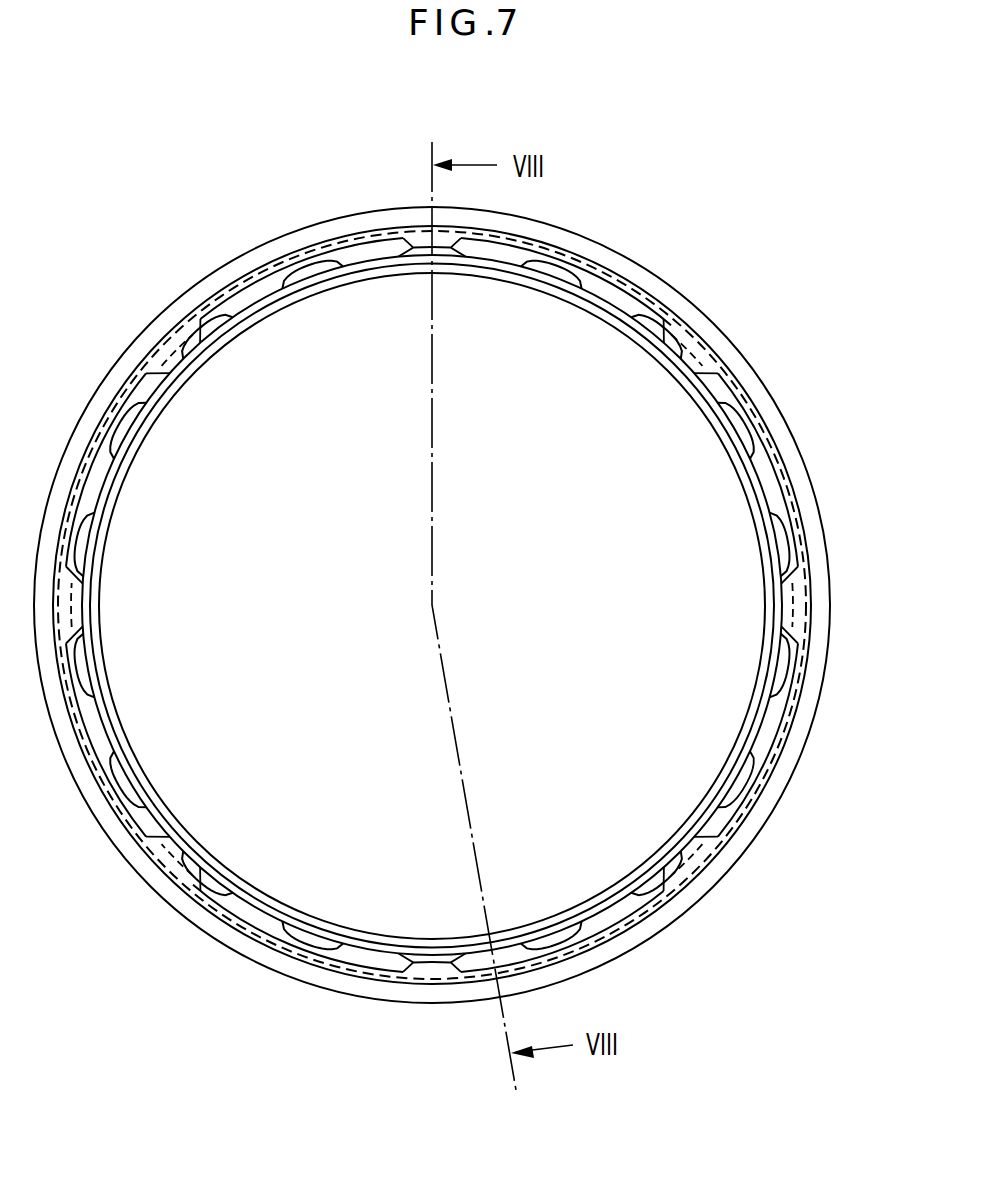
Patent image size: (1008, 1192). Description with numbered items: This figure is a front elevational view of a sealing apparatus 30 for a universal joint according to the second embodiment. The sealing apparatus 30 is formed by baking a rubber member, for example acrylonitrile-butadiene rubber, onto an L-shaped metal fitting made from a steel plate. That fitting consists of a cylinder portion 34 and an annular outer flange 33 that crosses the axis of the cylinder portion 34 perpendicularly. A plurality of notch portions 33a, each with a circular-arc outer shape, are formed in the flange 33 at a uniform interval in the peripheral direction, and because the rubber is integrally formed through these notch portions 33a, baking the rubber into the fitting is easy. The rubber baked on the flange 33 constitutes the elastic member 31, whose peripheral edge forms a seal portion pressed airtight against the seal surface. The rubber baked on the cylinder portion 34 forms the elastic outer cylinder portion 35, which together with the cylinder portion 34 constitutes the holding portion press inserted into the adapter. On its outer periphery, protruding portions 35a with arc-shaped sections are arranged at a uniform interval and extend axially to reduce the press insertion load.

The sealing apparatus 30 is at (722, 233).
The elastic member 31 is at (818, 606).
The annular outer flange 33 is at (786, 472).
The notch portion 33a is at (705, 338).
The cylinder portion 34 is at (697, 818).
The elastic outer cylinder portion 35 is at (762, 720).
The protruding portion 35a is at (742, 786).